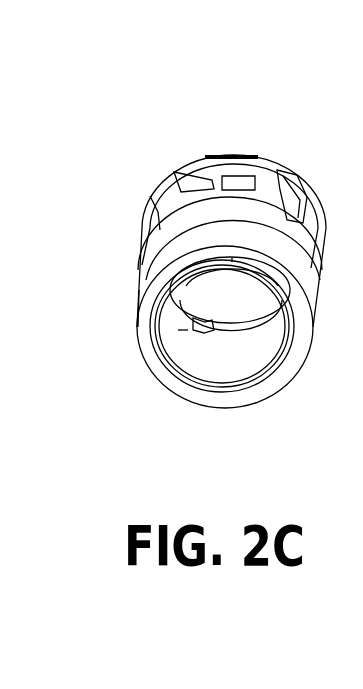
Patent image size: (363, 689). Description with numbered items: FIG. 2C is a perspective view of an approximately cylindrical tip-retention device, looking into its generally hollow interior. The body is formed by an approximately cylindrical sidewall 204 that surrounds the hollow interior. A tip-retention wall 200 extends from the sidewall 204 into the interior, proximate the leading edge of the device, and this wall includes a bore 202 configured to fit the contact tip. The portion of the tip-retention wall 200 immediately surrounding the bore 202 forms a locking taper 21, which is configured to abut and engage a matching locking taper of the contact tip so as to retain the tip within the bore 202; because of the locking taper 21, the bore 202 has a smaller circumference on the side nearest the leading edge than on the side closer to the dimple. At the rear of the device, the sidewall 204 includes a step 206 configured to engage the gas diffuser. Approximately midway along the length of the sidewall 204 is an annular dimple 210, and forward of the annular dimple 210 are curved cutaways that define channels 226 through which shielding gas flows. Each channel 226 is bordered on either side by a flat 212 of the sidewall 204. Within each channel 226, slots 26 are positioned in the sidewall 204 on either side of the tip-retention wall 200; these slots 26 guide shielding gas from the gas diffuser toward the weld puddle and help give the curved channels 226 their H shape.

The tip-retention wall 200 is at (250, 290).
The bore 202 is at (229, 274).
The sidewall 204 is at (150, 262).
The step 206 is at (167, 373).
The annular dimple 210 is at (177, 175).
The flat 212 is at (266, 187).
The locking taper 21 is at (200, 273).
The slot 26 is at (210, 160).
The channel 226 is at (232, 141).